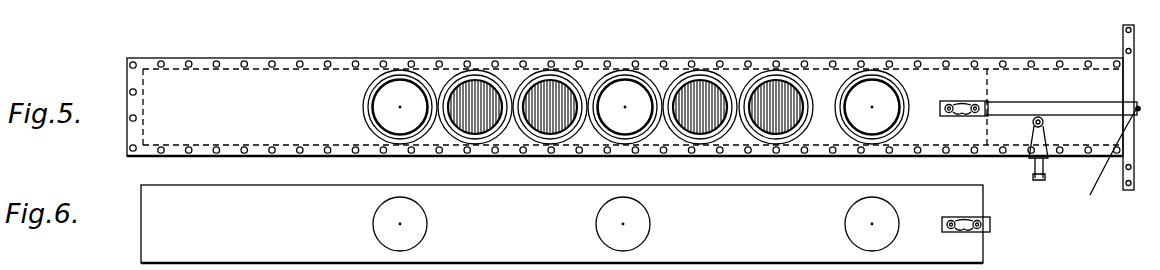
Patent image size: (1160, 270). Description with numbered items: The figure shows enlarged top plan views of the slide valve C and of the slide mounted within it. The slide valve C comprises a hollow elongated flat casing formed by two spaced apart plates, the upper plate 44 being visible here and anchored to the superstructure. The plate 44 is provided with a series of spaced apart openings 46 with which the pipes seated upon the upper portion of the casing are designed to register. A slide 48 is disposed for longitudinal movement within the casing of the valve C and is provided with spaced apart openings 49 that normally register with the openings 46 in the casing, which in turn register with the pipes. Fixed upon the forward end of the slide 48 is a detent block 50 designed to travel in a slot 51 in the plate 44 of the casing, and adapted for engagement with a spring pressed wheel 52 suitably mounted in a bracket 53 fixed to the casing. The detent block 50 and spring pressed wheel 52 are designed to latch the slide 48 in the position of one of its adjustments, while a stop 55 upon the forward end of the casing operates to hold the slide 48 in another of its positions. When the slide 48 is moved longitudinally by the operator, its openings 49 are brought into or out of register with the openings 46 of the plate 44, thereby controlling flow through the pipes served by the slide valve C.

In FIG. 5, the slide valve C is at (252, 58).
In FIG. 5, the plate 44 is at (625, 107).
In FIG. 5, the openings 46 is at (397, 82).
In FIG. 6, the slide 48 is at (562, 224).
In FIG. 6, the openings 49 is at (427, 224).
In FIG. 5, the detent block 50 is at (961, 100).
In FIG. 6, the detent block 50 is at (958, 217).
In FIG. 5, the slot 51 is at (1033, 102).
In FIG. 5, the spring pressed wheel 52 is at (1044, 122).
In FIG. 5, the bracket 53 is at (1050, 162).
In FIG. 5, the stop 55 is at (1099, 164).